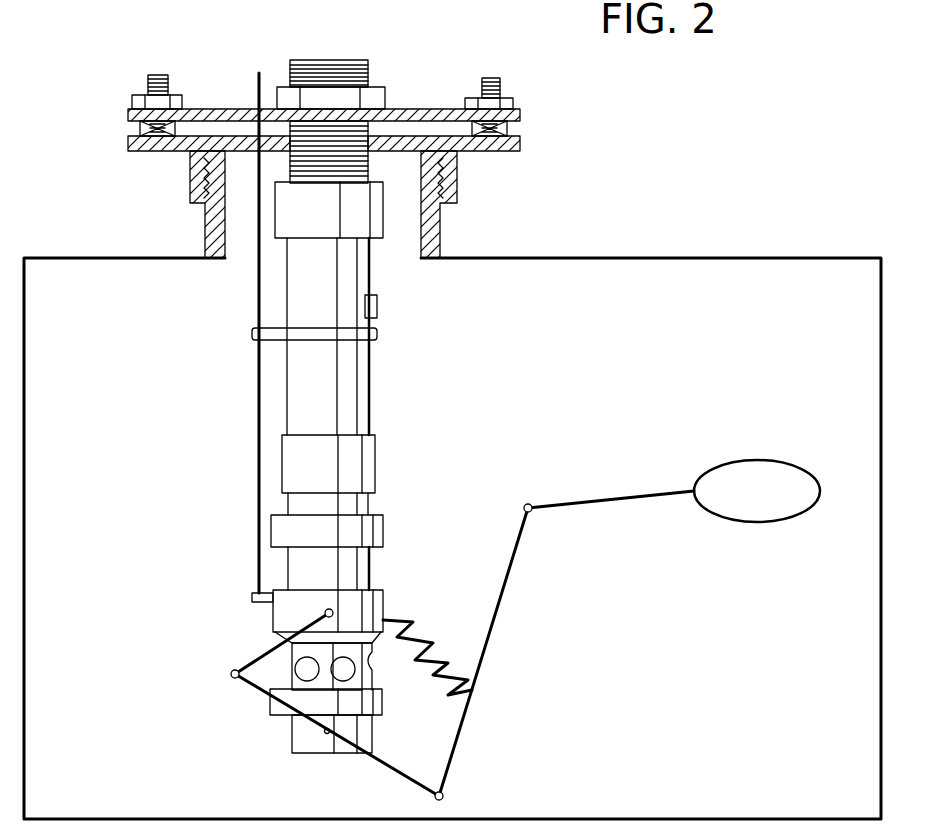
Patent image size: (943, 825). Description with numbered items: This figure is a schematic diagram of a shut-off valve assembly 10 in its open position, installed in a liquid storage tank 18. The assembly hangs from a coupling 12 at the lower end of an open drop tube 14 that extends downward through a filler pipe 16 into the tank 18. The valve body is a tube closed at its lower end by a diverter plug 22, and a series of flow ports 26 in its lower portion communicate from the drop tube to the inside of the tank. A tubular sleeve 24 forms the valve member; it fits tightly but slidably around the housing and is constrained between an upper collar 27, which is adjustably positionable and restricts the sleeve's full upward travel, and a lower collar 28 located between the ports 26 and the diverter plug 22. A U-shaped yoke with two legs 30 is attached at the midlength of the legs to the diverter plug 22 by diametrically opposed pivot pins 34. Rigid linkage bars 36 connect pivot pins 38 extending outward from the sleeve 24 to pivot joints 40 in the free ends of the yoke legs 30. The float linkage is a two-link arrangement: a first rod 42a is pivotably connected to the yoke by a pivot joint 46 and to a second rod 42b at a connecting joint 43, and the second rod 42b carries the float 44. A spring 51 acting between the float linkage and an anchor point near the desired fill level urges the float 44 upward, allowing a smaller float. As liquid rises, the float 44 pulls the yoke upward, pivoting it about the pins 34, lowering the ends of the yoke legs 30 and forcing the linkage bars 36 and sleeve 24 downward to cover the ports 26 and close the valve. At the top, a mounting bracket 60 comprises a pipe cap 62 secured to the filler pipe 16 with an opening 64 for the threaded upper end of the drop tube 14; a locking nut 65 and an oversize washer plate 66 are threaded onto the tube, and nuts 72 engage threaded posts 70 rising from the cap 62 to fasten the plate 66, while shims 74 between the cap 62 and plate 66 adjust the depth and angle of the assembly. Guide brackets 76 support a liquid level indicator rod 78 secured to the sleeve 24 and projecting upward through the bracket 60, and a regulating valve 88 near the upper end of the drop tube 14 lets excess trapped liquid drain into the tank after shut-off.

The shut-off valve assembly 10 is at (331, 474).
The coupling 12 is at (376, 463).
The drop tube 14 is at (403, 387).
The filler pipe 16 is at (203, 228).
The liquid storage tank 18 is at (546, 260).
The diverter plug 22 is at (374, 725).
The sleeve 24 is at (385, 608).
The flow ports 26 is at (362, 672).
The upper collar 27 is at (384, 530).
The lower collar 28 is at (268, 715).
The yoke legs 30 is at (385, 765).
The pivot pins 34 is at (327, 735).
The linkage bars 36 is at (262, 652).
The pivot pins 38 is at (320, 612).
The pivot joints 40 is at (233, 676).
The first rod 42a is at (484, 655).
The second rod 42b is at (593, 500).
The pivot 43 is at (533, 510).
The float 44 is at (748, 460).
The pivot joint 46 is at (444, 795).
The spring 51 is at (440, 655).
The mounting bracket 60 is at (326, 147).
The pipe cap 62 is at (332, 197).
The opening 64 is at (365, 158).
The locking nut 65 is at (382, 100).
The washer plate 66 is at (412, 109).
The threaded posts 70 is at (155, 76).
The nuts 72 is at (136, 100).
The shims 74 is at (140, 128).
The guide brackets 76 is at (252, 334).
The liquid level indicator rod 78 is at (258, 397).
The regulating valve 88 is at (378, 306).